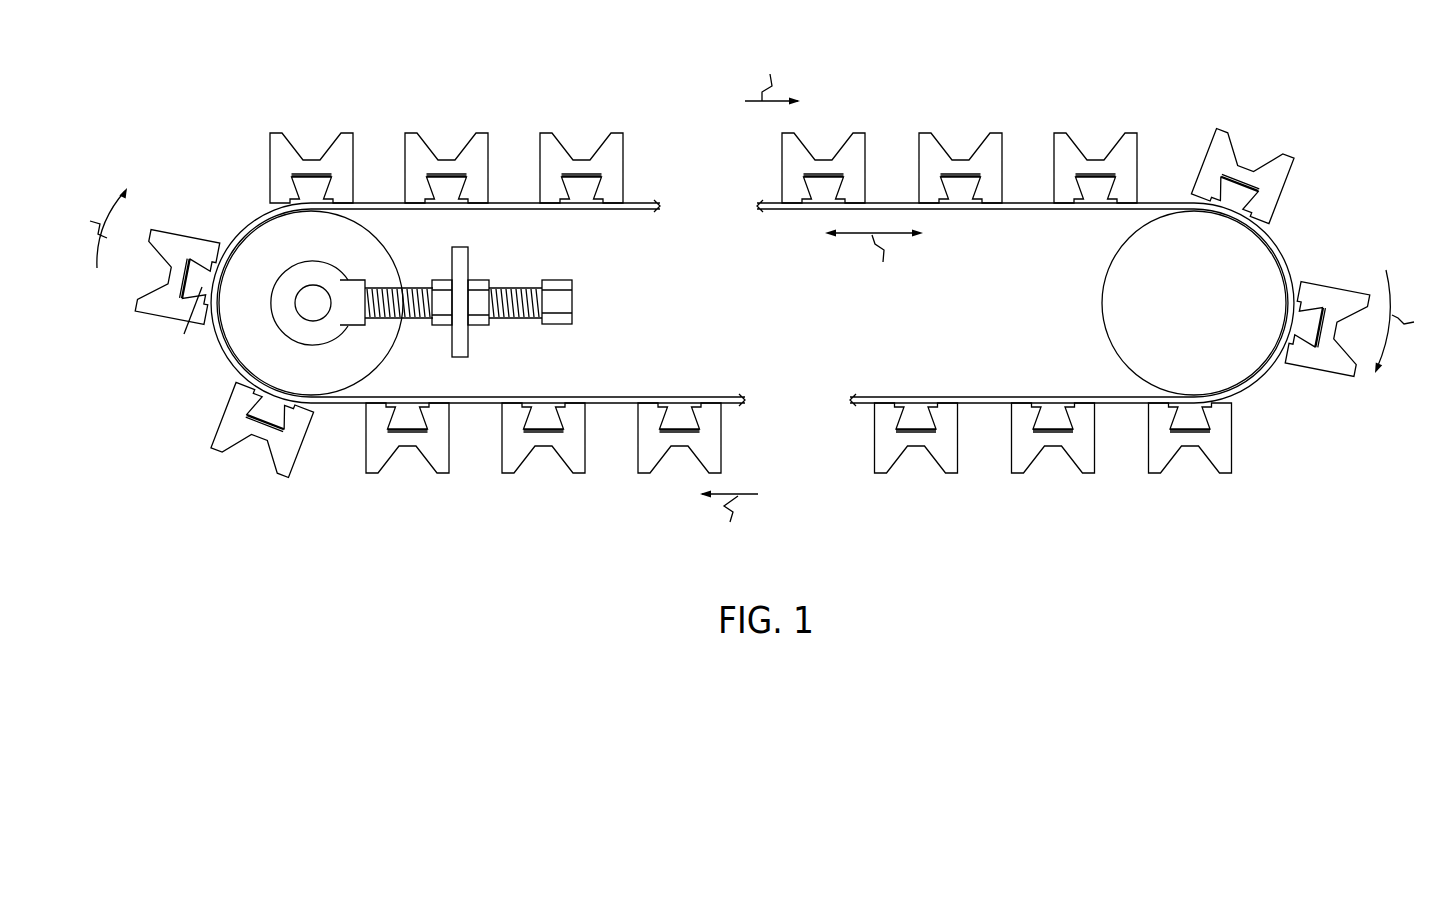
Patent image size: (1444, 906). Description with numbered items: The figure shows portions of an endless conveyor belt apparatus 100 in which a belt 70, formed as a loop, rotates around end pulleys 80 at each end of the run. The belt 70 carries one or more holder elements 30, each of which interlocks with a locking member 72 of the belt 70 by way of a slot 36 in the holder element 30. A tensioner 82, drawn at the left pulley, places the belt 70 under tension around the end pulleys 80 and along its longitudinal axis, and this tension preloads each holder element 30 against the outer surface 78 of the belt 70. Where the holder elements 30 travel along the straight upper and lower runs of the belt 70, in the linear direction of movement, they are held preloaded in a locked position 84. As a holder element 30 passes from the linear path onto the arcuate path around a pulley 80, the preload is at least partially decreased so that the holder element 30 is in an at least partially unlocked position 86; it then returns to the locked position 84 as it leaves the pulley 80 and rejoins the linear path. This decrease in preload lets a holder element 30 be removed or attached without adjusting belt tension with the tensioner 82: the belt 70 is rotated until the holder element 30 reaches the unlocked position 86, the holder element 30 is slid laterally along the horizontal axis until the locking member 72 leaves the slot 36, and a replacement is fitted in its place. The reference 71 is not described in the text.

The endless conveyor belt apparatus 100 is at (752, 330).
The holder element 30 is at (474, 128).
The slot 36 is at (188, 258).
The belt 70 is at (528, 452).
The belt lower surface 71 is at (528, 425).
The locking member 72 is at (1103, 188).
The outer surface 78 is at (485, 177).
The end pulleys 80 is at (240, 347).
The tensioner 82 is at (456, 262).
The locked position 84 is at (975, 303).
The at least partially unlocked position 86 is at (798, 305).